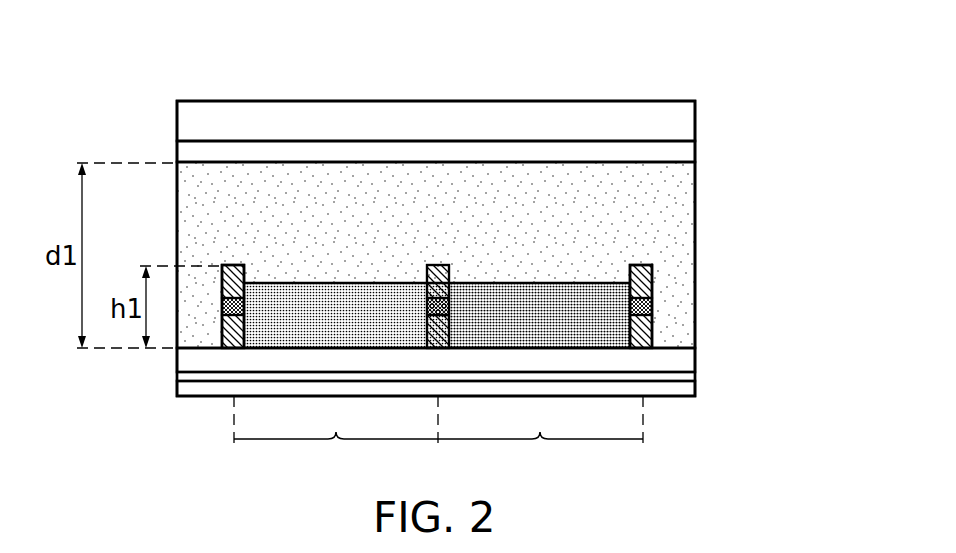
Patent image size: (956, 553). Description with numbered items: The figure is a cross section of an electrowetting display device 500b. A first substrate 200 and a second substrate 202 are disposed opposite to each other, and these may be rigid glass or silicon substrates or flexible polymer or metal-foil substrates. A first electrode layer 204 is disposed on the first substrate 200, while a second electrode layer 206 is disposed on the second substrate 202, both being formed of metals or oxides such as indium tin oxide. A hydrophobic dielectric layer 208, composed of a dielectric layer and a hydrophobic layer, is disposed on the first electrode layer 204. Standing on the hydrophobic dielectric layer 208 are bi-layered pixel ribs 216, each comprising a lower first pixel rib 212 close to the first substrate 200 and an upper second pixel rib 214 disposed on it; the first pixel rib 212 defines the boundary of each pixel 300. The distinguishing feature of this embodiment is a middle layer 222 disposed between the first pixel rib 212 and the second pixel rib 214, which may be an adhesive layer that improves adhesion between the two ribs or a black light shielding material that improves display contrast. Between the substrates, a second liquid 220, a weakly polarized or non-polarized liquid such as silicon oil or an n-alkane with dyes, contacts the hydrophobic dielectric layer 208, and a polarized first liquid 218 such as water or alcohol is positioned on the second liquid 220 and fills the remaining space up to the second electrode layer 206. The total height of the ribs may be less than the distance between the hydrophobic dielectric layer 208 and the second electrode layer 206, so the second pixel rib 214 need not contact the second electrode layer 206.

The first substrate 200 is at (187, 392).
The second substrate 202 is at (695, 113).
The first electrode layer 204 is at (187, 377).
The second electrode layer 206 is at (695, 148).
The hydrophobic dielectric layer 208 is at (187, 362).
The first pixel rib 212 is at (428, 270).
The second pixel rib 214 is at (437, 265).
The bi-layered pixel rib 216 is at (752, 3).
The first liquid 218 is at (695, 185).
The second liquid 220 is at (314, 303).
The middle layer 222 is at (652, 303).
The pixel 300 is at (438, 440).
The electrowetting display device 500b is at (128, 110).